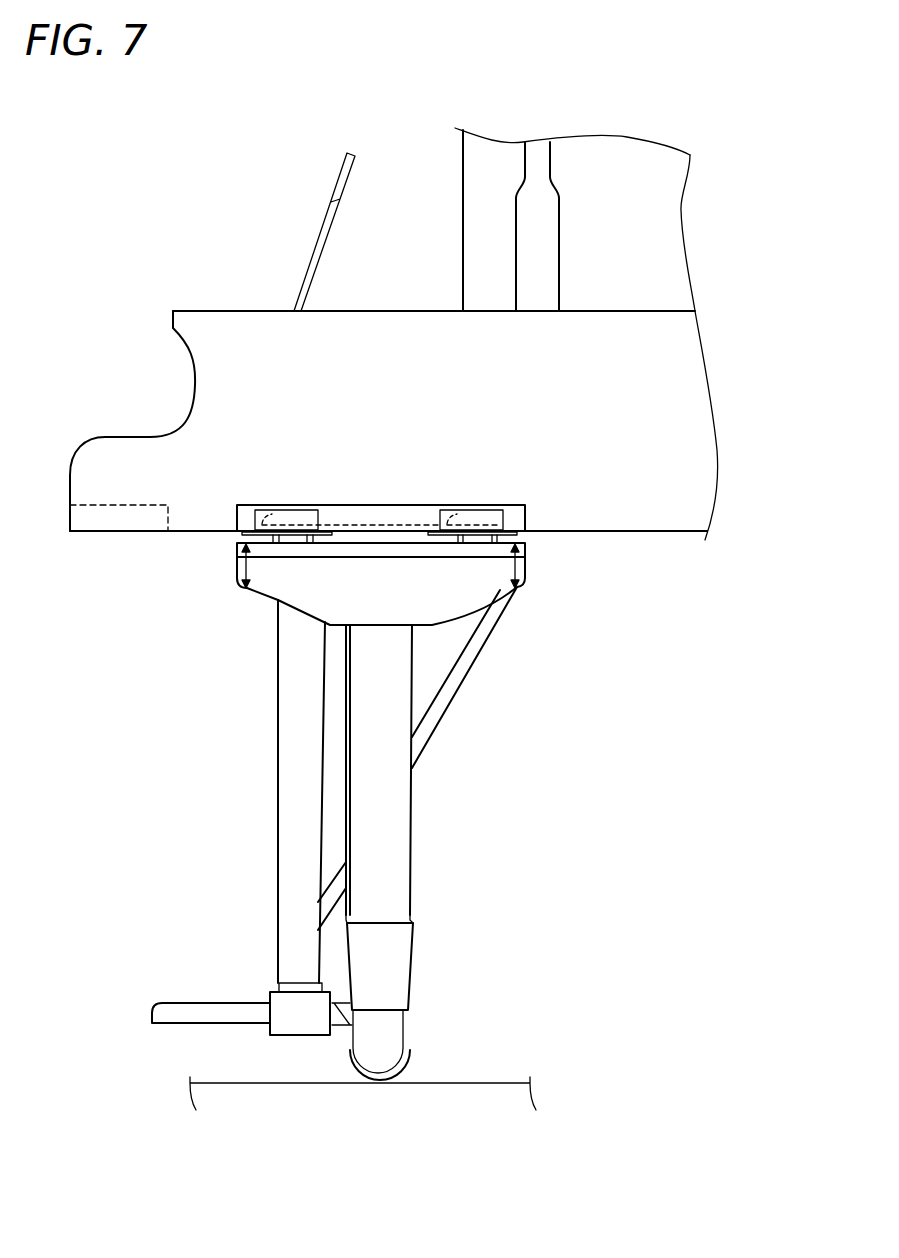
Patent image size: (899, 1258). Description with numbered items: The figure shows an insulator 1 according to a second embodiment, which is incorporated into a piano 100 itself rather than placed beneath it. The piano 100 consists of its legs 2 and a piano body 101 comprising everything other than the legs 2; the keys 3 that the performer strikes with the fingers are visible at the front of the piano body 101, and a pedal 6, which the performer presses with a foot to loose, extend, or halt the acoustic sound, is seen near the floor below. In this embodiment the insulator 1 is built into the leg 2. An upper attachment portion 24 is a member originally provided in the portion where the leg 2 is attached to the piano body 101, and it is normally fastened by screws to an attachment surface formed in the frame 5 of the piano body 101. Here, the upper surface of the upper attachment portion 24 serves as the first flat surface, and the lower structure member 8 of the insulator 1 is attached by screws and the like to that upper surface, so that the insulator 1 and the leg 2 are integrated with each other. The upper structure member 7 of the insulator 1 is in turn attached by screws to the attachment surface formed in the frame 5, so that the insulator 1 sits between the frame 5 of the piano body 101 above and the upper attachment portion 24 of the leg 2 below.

The piano 100 is at (213, 267).
The piano body 101 is at (647, 533).
The frame 5 is at (717, 500).
The keys 3 is at (110, 504).
The insulator 1 is at (238, 518).
The upper structure member 7 is at (527, 518).
The lower structure member 8 is at (527, 548).
The upper attachment portion 24 is at (463, 610).
The leg 2 is at (410, 815).
The pedal 6 is at (170, 1003).